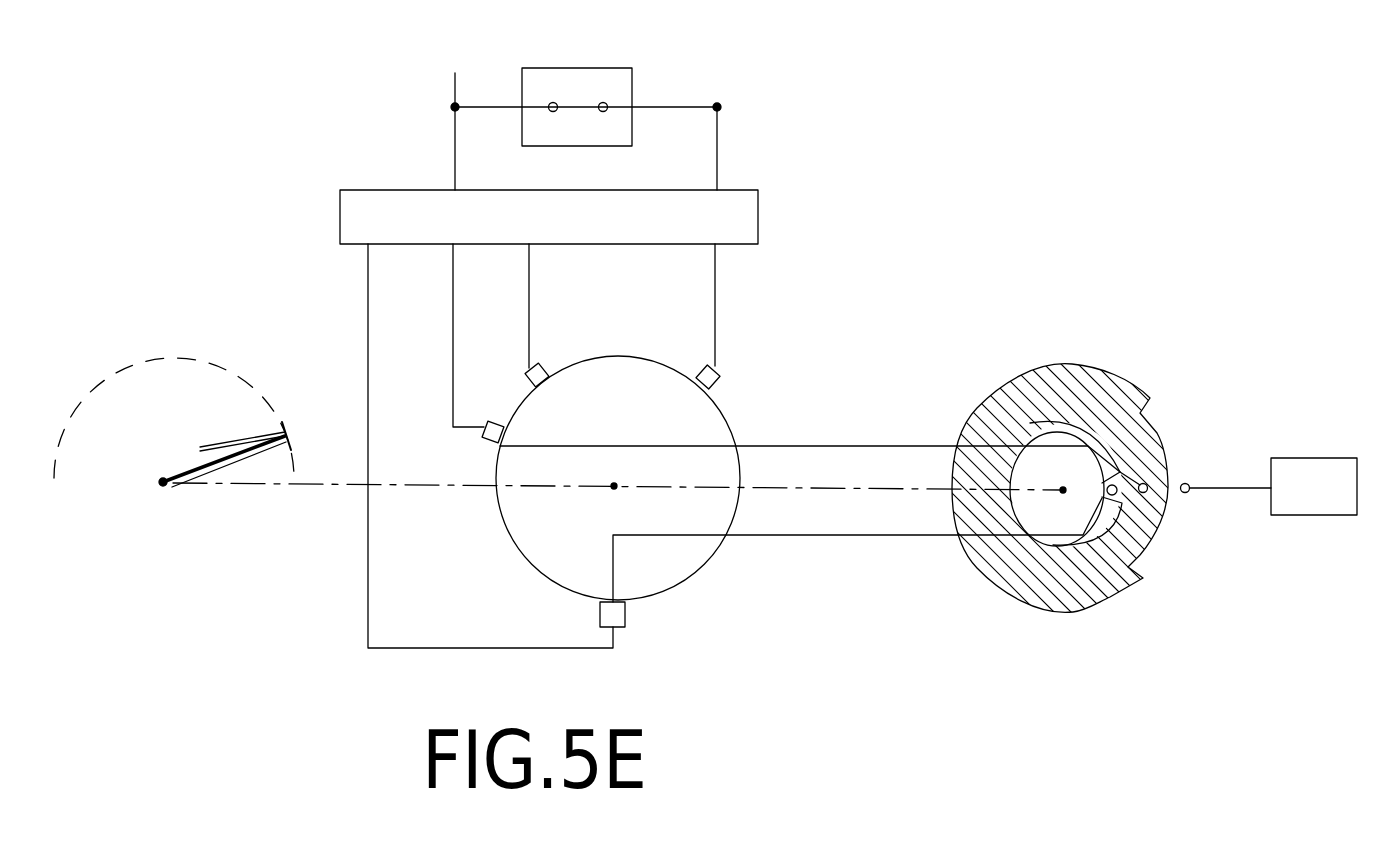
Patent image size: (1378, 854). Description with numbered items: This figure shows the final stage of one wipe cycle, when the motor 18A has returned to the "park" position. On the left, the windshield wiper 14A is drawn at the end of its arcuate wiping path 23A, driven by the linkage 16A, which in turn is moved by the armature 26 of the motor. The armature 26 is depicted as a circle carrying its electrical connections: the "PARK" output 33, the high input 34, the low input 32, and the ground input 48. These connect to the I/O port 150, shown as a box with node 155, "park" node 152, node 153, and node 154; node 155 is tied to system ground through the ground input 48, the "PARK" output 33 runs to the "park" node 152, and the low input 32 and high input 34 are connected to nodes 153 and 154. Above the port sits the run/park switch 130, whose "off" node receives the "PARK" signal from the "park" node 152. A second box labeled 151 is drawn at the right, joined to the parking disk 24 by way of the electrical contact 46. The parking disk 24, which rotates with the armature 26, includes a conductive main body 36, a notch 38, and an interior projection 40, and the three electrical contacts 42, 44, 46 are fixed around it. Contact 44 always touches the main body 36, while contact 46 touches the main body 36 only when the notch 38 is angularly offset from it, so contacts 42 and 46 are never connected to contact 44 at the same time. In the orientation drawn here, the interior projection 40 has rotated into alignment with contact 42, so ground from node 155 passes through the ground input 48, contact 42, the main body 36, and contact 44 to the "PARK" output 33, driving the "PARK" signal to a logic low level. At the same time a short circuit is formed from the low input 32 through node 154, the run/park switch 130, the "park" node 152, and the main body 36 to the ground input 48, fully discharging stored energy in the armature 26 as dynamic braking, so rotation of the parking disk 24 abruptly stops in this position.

The run/park switch 130 is at (632, 68).
The I/O port 150 is at (758, 220).
The controller 151 is at (1314, 486).
The "park" node 152 is at (461, 312).
The node 153 is at (549, 283).
The node 154 is at (729, 282).
The node 155 is at (480, 423).
The arcuate wiping path 23A is at (208, 362).
The windshield wiper 14A is at (257, 434).
The linkage 16A is at (214, 465).
The armature 26 is at (703, 592).
The motor 18A is at (752, 396).
The high input 34 is at (527, 372).
The low input 32 is at (697, 368).
The "PARK" output 33 is at (488, 447).
The ground input 48 is at (627, 615).
The main body 36 is at (1088, 409).
The interior projection 40 is at (1010, 405).
The electrical contact 42 is at (1053, 545).
The electrical contact 44 is at (1147, 492).
The electrical contact 46 is at (1185, 484).
The notch 38 is at (1145, 567).
The parking disk 24 is at (1081, 628).